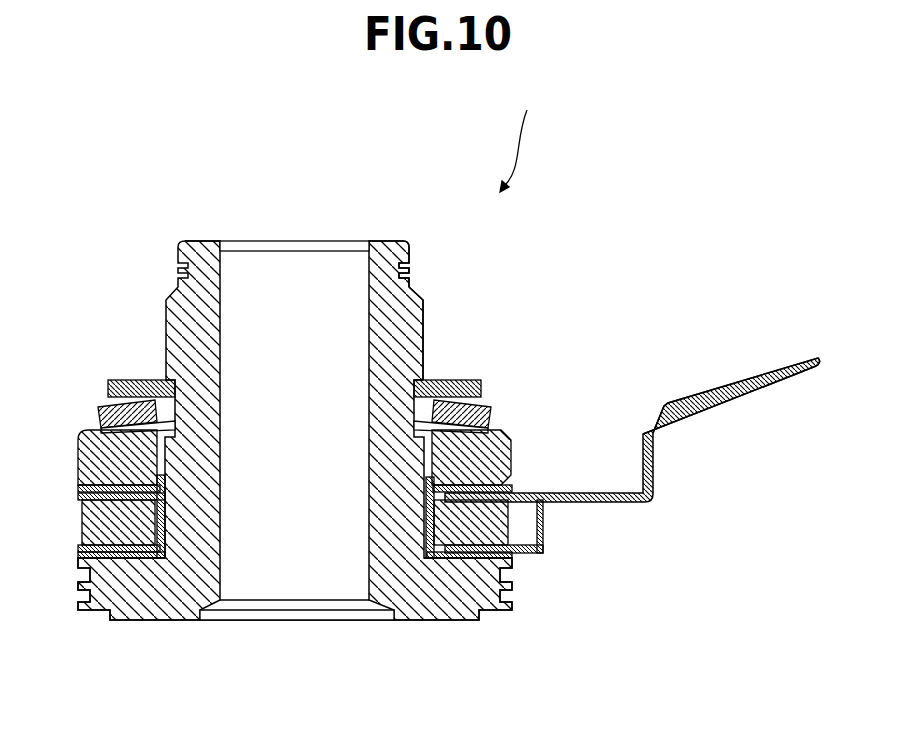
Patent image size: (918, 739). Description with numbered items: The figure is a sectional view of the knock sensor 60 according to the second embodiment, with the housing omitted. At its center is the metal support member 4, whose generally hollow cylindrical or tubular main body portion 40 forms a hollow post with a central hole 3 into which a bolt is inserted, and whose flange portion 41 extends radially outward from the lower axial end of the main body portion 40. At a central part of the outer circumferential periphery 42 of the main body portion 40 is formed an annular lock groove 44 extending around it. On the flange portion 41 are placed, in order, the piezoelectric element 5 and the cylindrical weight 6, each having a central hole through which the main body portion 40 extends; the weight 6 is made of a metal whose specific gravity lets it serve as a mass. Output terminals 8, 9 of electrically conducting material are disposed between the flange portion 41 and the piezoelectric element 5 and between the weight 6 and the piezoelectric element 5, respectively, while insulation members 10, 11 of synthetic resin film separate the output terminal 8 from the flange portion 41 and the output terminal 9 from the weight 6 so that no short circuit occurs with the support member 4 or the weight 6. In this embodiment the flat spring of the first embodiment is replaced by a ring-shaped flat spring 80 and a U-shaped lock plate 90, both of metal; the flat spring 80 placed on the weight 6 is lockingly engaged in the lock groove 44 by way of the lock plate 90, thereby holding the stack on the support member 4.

The central hole 3 is at (221, 288).
The support member 4 is at (295, 436).
The piezoelectric element 5 is at (513, 550).
The weight 6 is at (482, 452).
The output terminal 8 is at (618, 502).
The output terminal 9 is at (632, 468).
The insulation member 10 is at (458, 544).
The insulation member 11 is at (428, 490).
The main body portion 40 is at (381, 258).
The flange portion 41 is at (467, 592).
The outer circumferential periphery 42 is at (424, 318).
The lock groove 44 is at (417, 412).
The knock sensor 60 is at (524, 139).
The flat spring 80 is at (492, 406).
The lock plate 90 is at (457, 379).